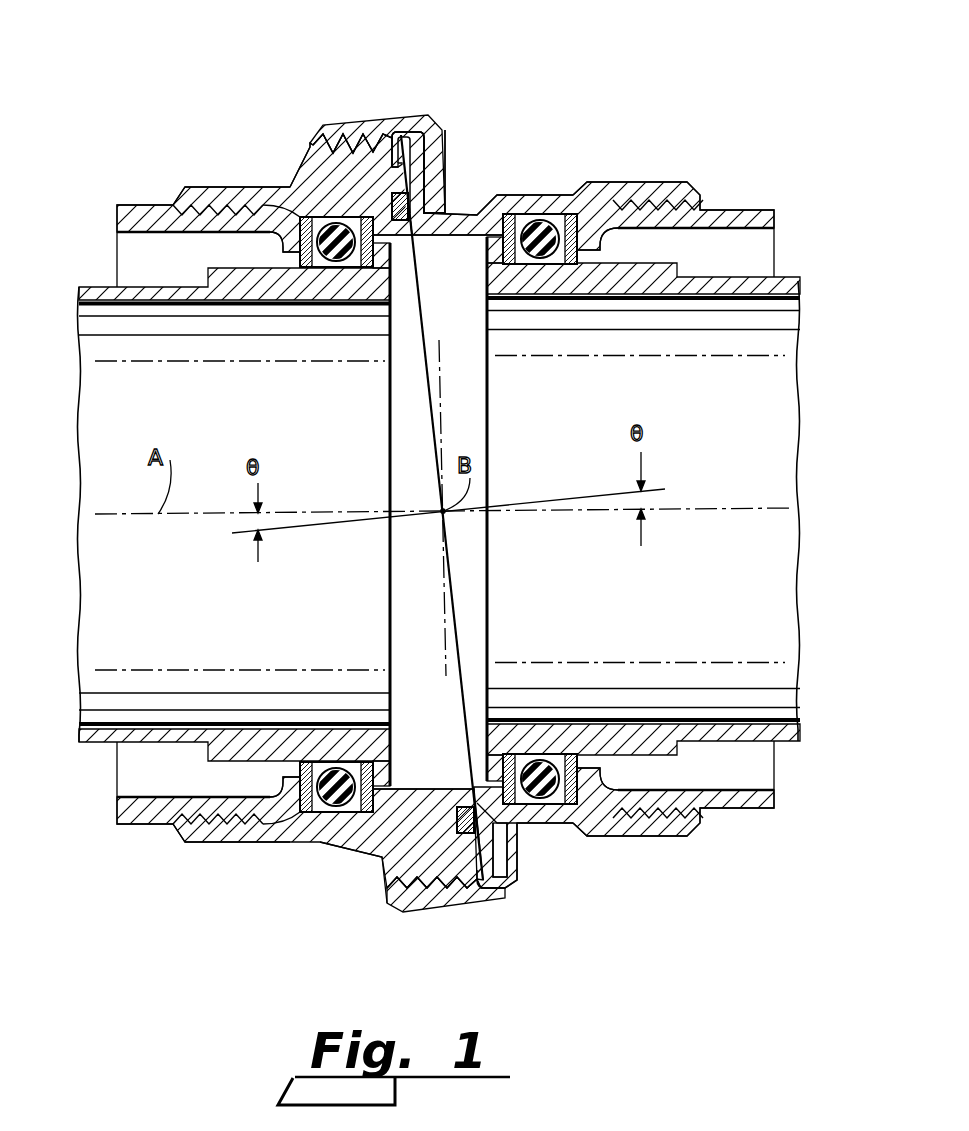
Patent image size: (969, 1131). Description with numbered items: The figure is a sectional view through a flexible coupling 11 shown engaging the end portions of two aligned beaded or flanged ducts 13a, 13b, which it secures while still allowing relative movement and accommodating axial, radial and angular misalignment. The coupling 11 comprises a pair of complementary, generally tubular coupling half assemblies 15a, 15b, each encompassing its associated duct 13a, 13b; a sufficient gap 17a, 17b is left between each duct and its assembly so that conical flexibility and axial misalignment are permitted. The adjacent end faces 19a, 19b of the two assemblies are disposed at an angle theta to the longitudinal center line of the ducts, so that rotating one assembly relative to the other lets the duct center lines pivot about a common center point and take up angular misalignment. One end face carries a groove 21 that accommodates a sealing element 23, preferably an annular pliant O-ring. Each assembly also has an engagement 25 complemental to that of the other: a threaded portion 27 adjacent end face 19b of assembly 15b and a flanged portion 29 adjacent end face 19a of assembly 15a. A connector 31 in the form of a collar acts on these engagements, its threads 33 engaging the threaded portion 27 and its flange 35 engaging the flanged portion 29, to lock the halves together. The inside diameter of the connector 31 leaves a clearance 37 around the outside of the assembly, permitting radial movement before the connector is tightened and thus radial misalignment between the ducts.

The flexible coupling 11 is at (445, 112).
The beaded or flanged duct 13a is at (787, 282).
The beaded or flanged duct 13b is at (84, 287).
The coupling half assembly 15a is at (640, 187).
The coupling half assembly 15b is at (215, 185).
The gap 17a is at (712, 257).
The gap 17b is at (175, 253).
The end face 19a is at (433, 193).
The end face 19b is at (396, 131).
The groove 21 is at (392, 195).
The sealing element 23 is at (465, 810).
The engagement 25 is at (362, 157).
The threaded portion 27 is at (405, 875).
The flanged portion 29 is at (514, 838).
The connector 31 is at (372, 123).
The threads 33 is at (443, 898).
The flange 35 is at (437, 138).
The clearance 37 is at (452, 200).